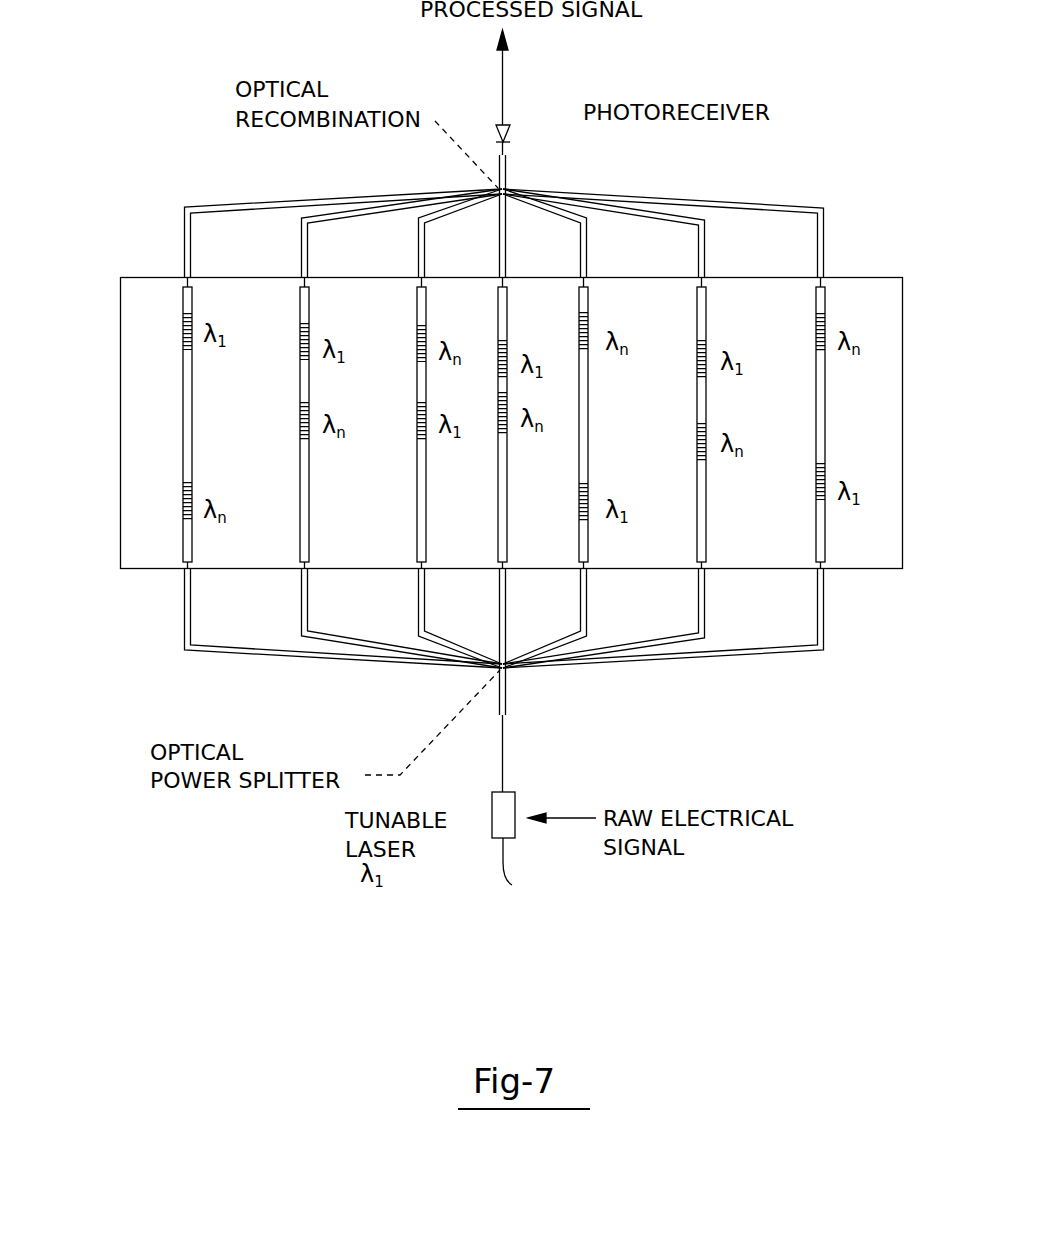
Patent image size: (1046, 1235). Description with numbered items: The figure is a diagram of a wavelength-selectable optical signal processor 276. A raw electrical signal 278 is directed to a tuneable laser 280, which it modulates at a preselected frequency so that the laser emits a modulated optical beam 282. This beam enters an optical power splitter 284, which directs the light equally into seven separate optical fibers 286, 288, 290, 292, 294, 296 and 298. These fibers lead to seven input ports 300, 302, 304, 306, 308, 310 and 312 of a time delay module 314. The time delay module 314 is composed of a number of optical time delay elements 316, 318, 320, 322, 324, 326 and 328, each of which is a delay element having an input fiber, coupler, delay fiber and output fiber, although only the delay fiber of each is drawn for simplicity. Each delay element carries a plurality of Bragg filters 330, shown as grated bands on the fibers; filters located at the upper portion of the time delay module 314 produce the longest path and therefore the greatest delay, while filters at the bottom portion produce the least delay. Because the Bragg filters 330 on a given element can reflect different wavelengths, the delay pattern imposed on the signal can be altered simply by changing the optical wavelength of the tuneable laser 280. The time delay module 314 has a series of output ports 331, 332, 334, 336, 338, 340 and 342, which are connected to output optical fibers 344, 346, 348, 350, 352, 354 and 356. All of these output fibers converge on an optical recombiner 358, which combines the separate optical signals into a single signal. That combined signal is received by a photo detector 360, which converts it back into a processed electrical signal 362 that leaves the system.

The optical signal processor 276 is at (96, 190).
The raw electrical signal 278 is at (505, 862).
The tuneable laser 280 is at (492, 820).
The modulated optical beam 282 is at (505, 755).
The optical power splitter 284 is at (508, 703).
The optical fiber 286 is at (268, 656).
The optical fiber 288 is at (333, 646).
The optical fiber 290 is at (425, 645).
The optical fiber 292 is at (506, 640).
The optical fiber 294 is at (548, 660).
The optical fiber 296 is at (680, 646).
The optical fiber 298 is at (775, 656).
The input port 300 is at (183, 569).
The input port 302 is at (300, 569).
The input port 304 is at (424, 582).
The input port 306 is at (504, 566).
The input port 308 is at (590, 570).
The input port 310 is at (706, 570).
The input port 312 is at (824, 570).
The time delay module 314 is at (120, 363).
The optical time delay element 316 is at (192, 420).
The optical time delay element 318 is at (309, 478).
The optical time delay element 320 is at (417, 522).
The optical time delay element 322 is at (498, 482).
The optical time delay element 324 is at (588, 432).
The optical time delay element 326 is at (707, 321).
The optical time delay element 328 is at (816, 300).
The Bragg filter 330 is at (183, 315).
The output port 331 is at (183, 277).
The output port 332 is at (308, 278).
The output port 334 is at (426, 287).
The output port 336 is at (507, 288).
The output port 338 is at (588, 287).
The output port 340 is at (706, 287).
The output port 342 is at (825, 287).
The output optical fiber 344 is at (257, 202).
The output optical fiber 346 is at (330, 198).
The output optical fiber 348 is at (440, 200).
The output optical fiber 350 is at (507, 196).
The output optical fiber 352 is at (568, 200).
The output optical fiber 354 is at (665, 200).
The output optical fiber 356 is at (778, 204).
The optical recombiner 358 is at (498, 184).
The photo detector 360 is at (505, 128).
The processed electrical signal 362 is at (500, 117).